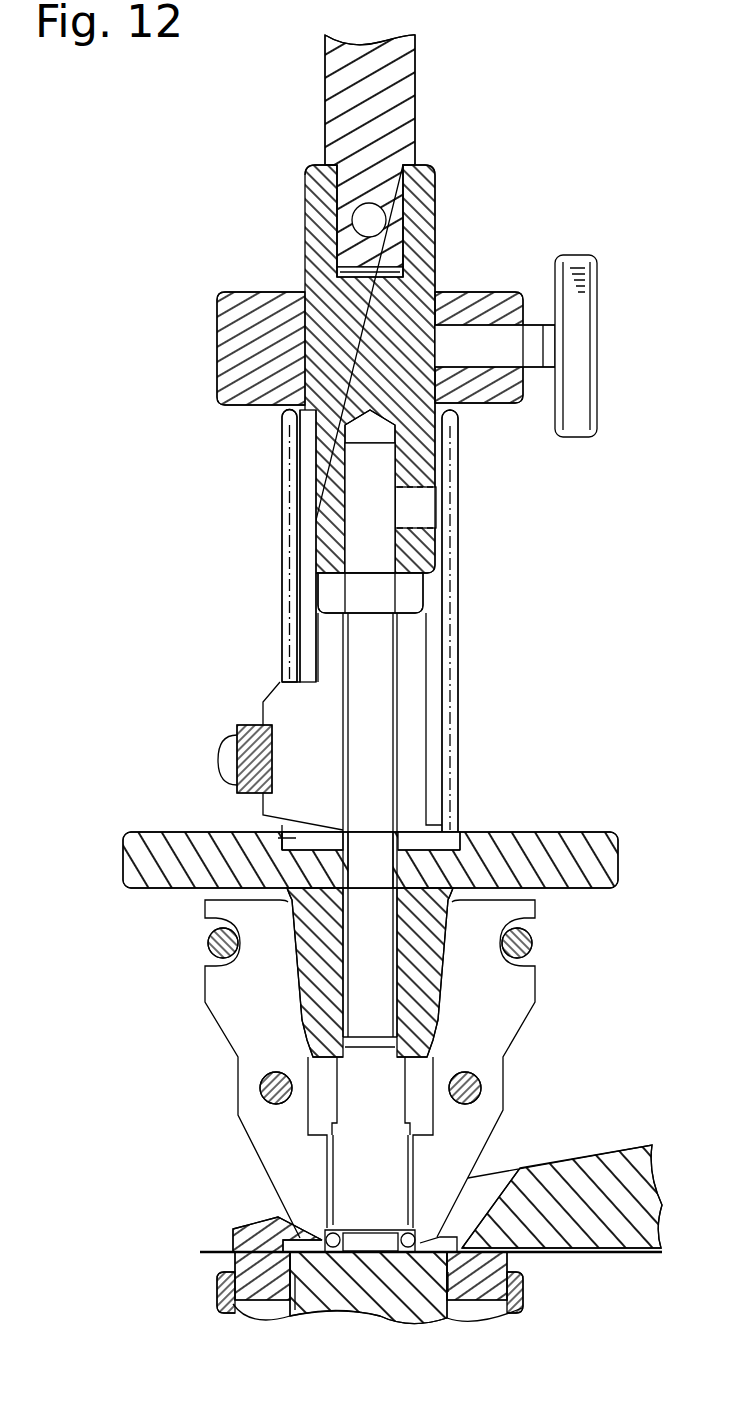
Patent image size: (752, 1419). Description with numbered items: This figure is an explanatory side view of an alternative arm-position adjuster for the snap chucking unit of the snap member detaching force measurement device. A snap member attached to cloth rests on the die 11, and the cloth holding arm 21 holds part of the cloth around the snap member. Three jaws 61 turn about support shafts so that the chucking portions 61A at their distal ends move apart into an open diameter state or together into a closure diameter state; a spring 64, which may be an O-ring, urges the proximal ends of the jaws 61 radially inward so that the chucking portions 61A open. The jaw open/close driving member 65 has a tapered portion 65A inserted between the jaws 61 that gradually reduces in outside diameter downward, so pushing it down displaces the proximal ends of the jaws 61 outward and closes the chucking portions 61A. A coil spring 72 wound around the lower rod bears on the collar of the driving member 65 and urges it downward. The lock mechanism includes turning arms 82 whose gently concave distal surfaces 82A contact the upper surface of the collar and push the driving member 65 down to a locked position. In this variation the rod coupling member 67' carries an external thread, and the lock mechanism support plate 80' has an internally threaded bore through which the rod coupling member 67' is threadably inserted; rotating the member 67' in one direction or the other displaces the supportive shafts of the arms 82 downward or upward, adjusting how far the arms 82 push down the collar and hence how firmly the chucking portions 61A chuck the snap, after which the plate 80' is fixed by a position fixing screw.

The rod coupling member 67' is at (428, 359).
The lock mechanism support plate 80' is at (516, 333).
The turning arm 82 is at (280, 682).
The spring 72 is at (460, 683).
The distal surface 82A is at (287, 827).
The jaw open/close driving member 65 is at (620, 835).
The spring 64 is at (207, 943).
The jaw 61 is at (522, 1020).
The tapered portion 65A is at (310, 1040).
The cloth holding arm 21 is at (555, 1163).
The chucking portion 61A is at (302, 1218).
The die 11 is at (330, 1288).